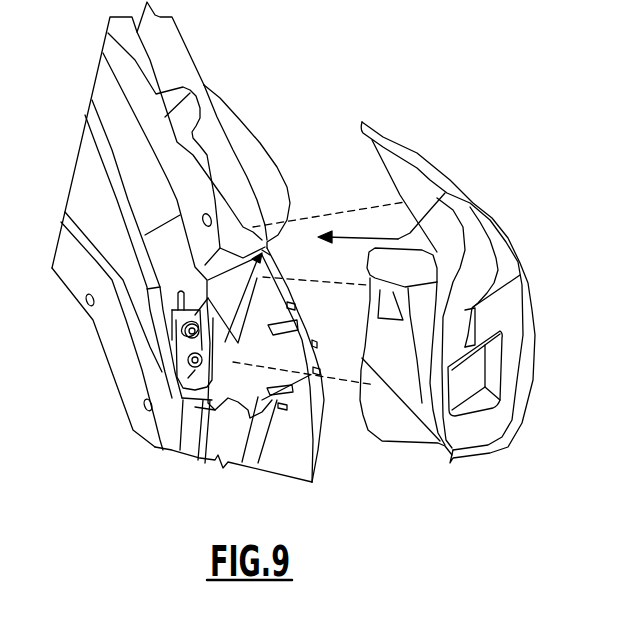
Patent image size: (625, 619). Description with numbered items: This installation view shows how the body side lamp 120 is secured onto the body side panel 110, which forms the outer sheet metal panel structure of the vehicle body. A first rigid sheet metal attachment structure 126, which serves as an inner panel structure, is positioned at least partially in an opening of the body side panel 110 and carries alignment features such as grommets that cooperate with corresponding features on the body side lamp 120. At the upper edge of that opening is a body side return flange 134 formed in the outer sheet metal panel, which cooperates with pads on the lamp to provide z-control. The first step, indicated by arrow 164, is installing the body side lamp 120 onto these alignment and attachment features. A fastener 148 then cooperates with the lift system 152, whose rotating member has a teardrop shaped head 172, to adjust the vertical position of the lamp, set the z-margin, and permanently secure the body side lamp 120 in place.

The body side panel 110 is at (307, 443).
The body side lamp 120 is at (450, 178).
The first rigid sheet metal attachment structure 126 is at (190, 373).
The body side return flange 134 is at (270, 245).
The fastener 148 is at (172, 365).
The lift system 152 is at (382, 450).
The arrow 164 is at (357, 238).
The teardrop shaped head 172 is at (210, 340).